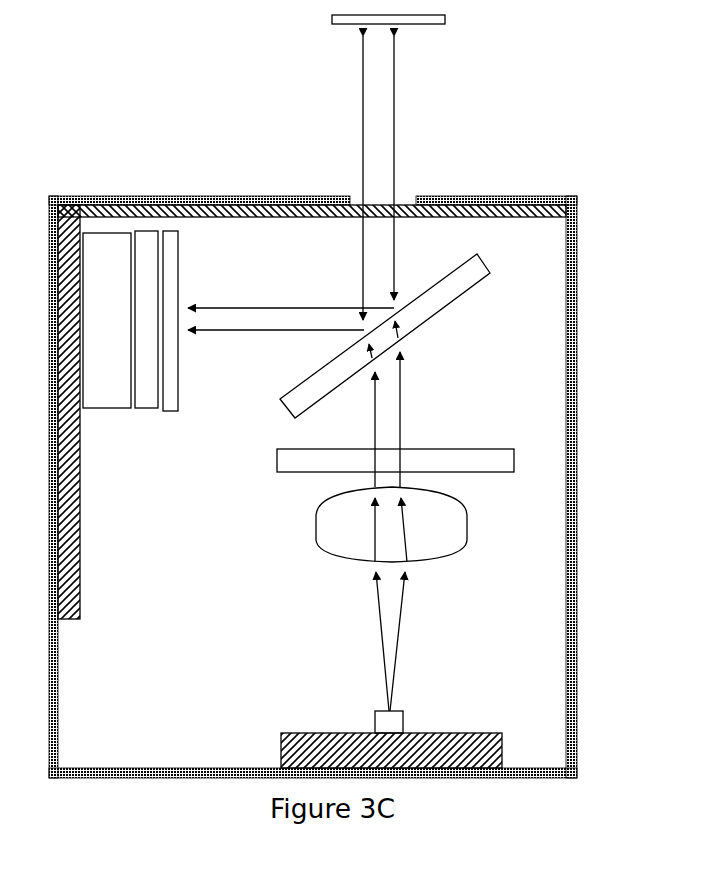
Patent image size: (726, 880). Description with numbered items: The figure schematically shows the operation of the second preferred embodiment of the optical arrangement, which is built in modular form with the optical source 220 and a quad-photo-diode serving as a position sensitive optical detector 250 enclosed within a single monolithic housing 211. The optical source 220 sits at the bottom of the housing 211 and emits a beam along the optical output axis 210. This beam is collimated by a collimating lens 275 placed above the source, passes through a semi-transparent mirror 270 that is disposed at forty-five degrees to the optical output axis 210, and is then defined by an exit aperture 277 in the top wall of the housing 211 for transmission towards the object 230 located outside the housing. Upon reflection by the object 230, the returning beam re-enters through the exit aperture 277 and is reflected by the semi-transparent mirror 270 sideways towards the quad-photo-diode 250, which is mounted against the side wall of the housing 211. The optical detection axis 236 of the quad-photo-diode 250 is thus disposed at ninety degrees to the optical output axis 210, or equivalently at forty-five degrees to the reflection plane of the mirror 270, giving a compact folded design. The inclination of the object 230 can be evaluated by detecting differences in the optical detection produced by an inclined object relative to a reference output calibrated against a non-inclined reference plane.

The monolithic housing 211 is at (575, 200).
The position sensitive optical detector 250 is at (146, 240).
The object 230 is at (440, 22).
The exit aperture 277 is at (401, 185).
The optical detection axis 236 is at (276, 288).
The semi-transparent mirror 270 is at (297, 369).
The optical output axis 210 is at (414, 407).
The collimating lens 275 is at (505, 459).
The optical source 220 is at (395, 718).